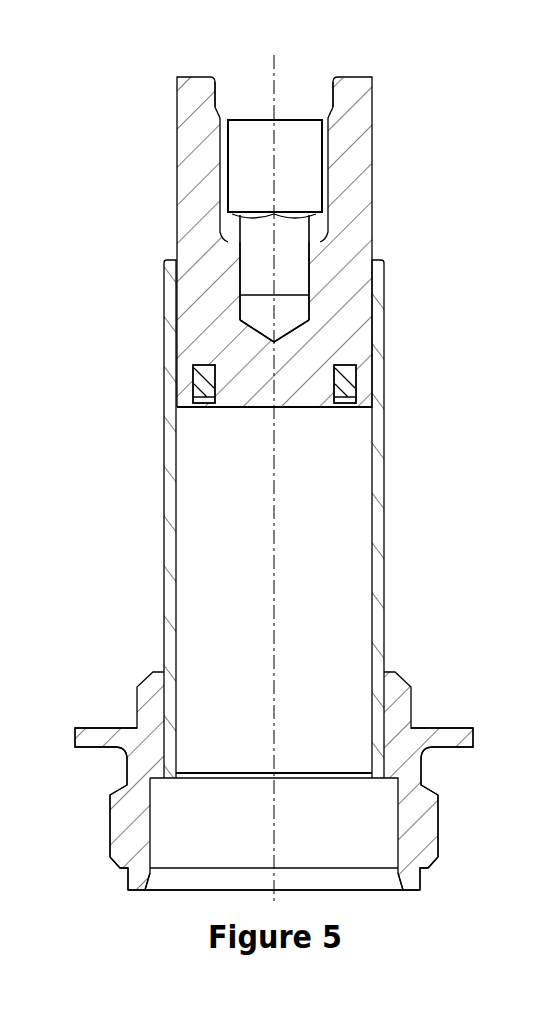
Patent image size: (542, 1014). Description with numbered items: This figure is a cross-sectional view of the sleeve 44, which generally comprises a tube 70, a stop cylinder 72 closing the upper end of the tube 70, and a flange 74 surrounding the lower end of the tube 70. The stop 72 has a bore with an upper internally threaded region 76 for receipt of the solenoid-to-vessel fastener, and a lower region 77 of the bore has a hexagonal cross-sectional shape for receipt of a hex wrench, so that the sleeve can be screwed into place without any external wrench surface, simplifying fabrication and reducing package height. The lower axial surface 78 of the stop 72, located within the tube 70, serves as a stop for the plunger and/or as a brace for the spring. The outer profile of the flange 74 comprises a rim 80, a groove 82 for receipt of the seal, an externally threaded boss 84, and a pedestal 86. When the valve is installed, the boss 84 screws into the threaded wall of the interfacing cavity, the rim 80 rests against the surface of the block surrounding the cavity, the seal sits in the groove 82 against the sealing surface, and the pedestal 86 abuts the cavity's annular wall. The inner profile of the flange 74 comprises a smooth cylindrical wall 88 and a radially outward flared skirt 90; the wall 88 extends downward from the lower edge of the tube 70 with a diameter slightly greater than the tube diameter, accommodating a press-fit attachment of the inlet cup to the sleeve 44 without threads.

The sleeve 44 is at (270, 477).
The tube 70 is at (385, 462).
The stop cylinder 72 is at (275, 222).
The flange 74 is at (270, 798).
The upper internally threaded region 76 is at (300, 97).
The lower region 77 is at (297, 312).
The lower axial surface 78 is at (238, 405).
The rim 80 is at (86, 738).
The groove 82 is at (125, 769).
The externally threaded boss 84 is at (110, 847).
The pedestal 86 is at (128, 888).
The smooth cylindrical wall 88 is at (396, 837).
The radially outward flared skirt 90 is at (398, 890).